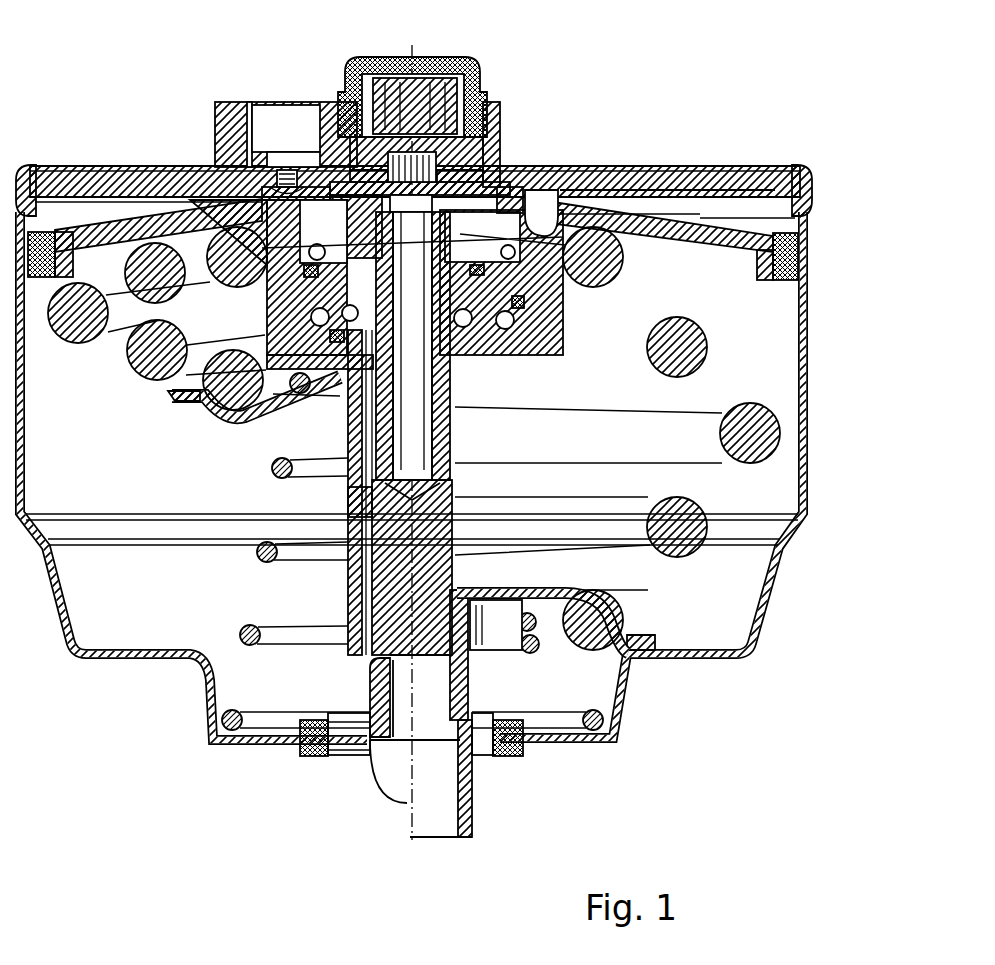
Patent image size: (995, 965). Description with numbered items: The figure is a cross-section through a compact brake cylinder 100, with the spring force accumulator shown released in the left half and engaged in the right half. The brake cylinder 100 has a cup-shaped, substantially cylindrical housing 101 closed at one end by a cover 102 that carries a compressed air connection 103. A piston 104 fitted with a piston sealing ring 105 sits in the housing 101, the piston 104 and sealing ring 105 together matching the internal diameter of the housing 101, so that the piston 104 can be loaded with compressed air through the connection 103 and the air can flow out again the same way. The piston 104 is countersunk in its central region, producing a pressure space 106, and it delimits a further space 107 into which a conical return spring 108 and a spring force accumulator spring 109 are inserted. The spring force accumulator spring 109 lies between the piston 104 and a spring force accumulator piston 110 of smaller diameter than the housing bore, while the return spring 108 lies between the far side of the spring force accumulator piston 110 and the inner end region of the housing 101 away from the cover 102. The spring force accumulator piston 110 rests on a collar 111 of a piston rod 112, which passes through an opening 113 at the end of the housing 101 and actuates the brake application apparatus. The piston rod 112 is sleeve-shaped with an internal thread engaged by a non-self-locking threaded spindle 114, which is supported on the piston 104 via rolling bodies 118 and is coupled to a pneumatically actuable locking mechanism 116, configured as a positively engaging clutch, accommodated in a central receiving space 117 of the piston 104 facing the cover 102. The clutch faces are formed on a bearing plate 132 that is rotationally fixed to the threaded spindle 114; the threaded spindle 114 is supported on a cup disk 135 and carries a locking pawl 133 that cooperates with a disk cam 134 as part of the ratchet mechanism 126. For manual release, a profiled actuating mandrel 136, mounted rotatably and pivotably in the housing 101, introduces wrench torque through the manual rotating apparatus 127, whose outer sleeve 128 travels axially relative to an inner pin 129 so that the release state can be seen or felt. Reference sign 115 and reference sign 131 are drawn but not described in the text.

The brake cylinder 100 is at (770, 655).
The housing 101 is at (810, 385).
The cover 102 is at (62, 185).
The compressed air connection 103 is at (300, 120).
The piston 104 is at (118, 230).
The piston sealing ring 105 is at (805, 252).
The pressure space 106 is at (218, 143).
The further space 107 is at (770, 483).
The return spring 108 is at (590, 742).
The spring force accumulator spring 109 is at (683, 547).
The spring force accumulator piston 110 is at (175, 397).
The collar 111 is at (335, 388).
The piston rod 112 is at (395, 800).
The opening 113 is at (495, 750).
The threaded spindle 114 is at (372, 605).
The shaft end 115 is at (432, 478).
The locking mechanism 116 is at (545, 355).
The central receiving space 117 is at (265, 300).
The rolling bodies 118 is at (270, 338).
The ratchet mechanism 126 is at (610, 192).
The manual rotating apparatus 127 is at (470, 65).
The outer sleeve 128 is at (458, 102).
The inner pin 129 is at (402, 85).
The sleeve 131 is at (462, 400).
The bearing plate 132 is at (565, 298).
The locking pawl 133 is at (612, 262).
The disk cam 134 is at (560, 200).
The cup disk 135 is at (495, 195).
The actuating mandrel 136 is at (490, 160).